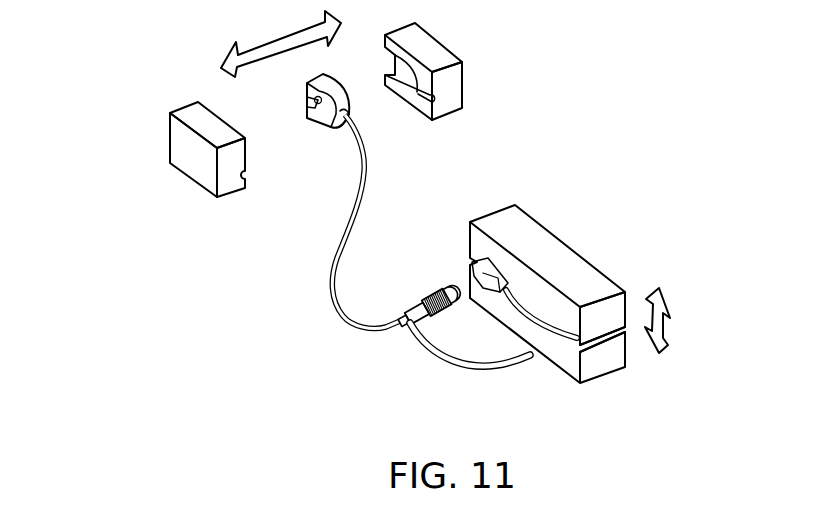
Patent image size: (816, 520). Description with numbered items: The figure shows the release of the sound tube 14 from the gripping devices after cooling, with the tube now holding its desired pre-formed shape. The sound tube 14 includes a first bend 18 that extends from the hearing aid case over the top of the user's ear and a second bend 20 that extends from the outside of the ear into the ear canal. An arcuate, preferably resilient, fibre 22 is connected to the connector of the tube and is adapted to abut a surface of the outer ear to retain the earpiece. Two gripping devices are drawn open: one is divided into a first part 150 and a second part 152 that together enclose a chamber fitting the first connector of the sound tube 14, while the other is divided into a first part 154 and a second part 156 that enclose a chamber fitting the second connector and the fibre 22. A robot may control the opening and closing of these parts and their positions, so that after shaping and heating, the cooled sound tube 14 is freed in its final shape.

The sound tube 14 is at (332, 267).
The first bend 18 is at (365, 148).
The second bend 20 is at (340, 312).
The fibre 22 is at (453, 357).
The first part of gripping device 150 is at (177, 138).
The second part of gripping device 152 is at (455, 83).
The first part of gripping device 154 is at (603, 368).
The second part of gripping device 156 is at (547, 243).